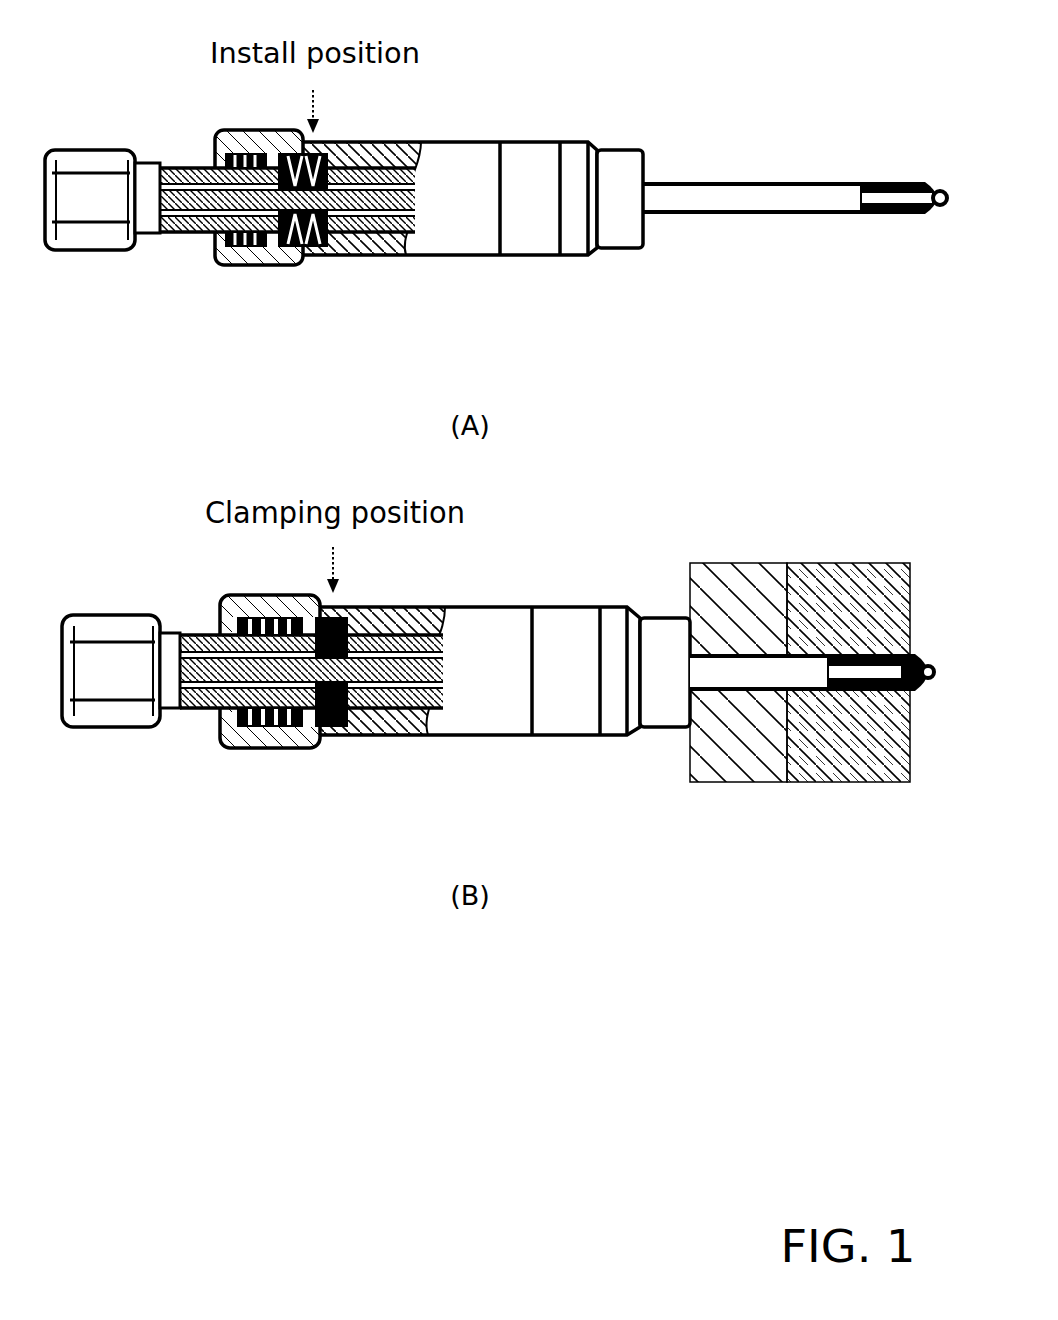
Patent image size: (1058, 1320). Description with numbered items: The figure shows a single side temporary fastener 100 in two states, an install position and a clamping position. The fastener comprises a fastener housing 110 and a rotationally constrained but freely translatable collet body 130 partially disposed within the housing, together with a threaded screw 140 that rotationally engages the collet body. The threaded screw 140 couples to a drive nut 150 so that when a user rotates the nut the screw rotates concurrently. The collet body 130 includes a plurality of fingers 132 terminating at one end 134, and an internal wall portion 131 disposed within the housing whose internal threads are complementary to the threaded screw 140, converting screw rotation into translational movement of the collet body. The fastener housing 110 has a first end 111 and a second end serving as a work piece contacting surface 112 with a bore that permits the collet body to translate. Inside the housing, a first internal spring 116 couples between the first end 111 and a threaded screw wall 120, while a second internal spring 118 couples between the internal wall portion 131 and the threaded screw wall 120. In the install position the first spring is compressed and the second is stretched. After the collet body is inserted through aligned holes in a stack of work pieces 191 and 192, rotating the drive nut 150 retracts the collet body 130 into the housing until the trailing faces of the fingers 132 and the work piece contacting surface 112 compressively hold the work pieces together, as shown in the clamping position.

The single side temporary fastener 100 is at (607, 290).
The fastener housing 110 is at (470, 143).
The first end 111 is at (215, 243).
The work piece contacting surface 112 is at (647, 168).
The first internal spring 116 is at (253, 237).
The second internal spring 118 is at (305, 237).
The threaded screw wall 120 is at (170, 235).
The collet body 130 is at (737, 188).
The internal wall portion 131 is at (370, 172).
The fingers 132 is at (905, 197).
The end 134 is at (950, 197).
The threaded screw 140 is at (197, 192).
The drive nut 150 is at (97, 250).
The work piece 191 is at (742, 560).
The work piece 192 is at (838, 560).